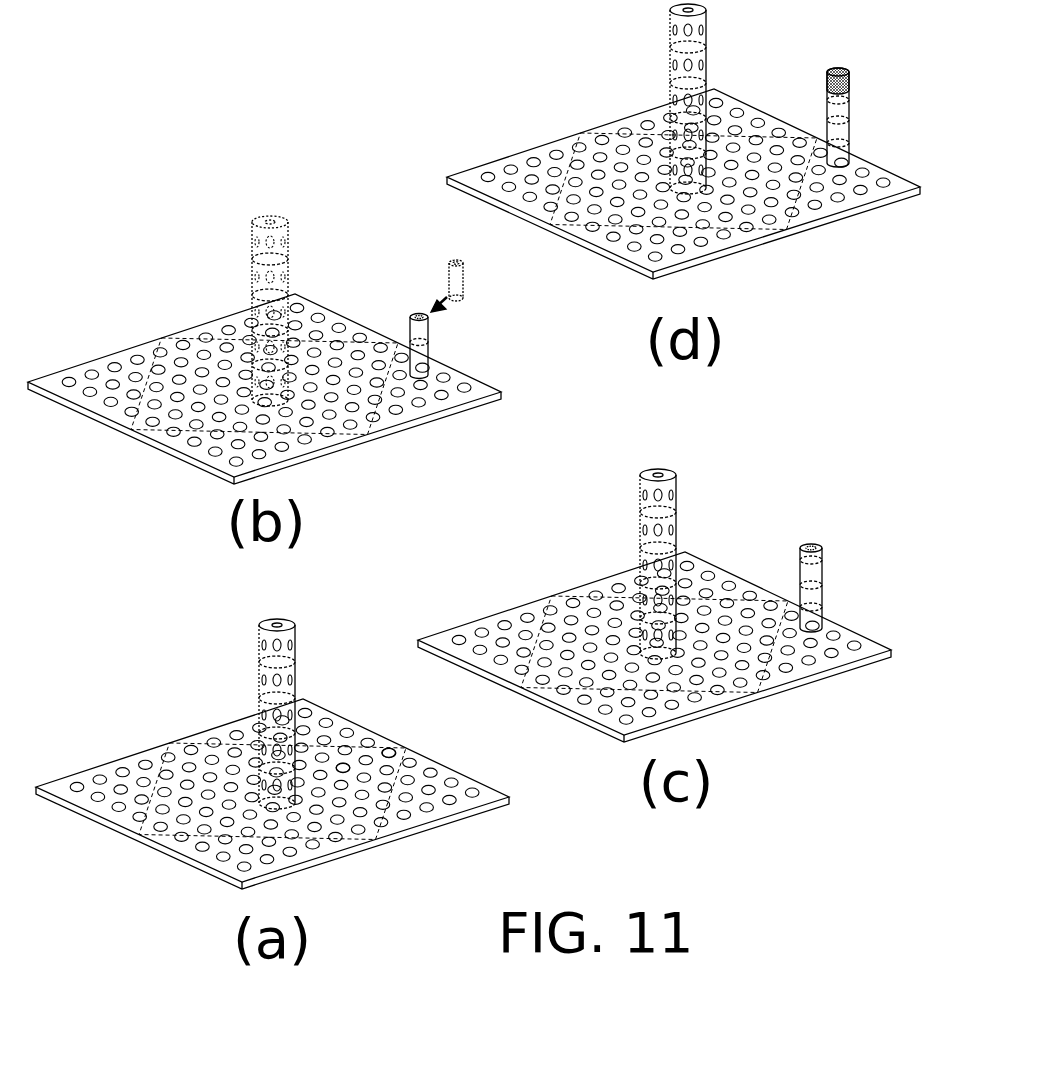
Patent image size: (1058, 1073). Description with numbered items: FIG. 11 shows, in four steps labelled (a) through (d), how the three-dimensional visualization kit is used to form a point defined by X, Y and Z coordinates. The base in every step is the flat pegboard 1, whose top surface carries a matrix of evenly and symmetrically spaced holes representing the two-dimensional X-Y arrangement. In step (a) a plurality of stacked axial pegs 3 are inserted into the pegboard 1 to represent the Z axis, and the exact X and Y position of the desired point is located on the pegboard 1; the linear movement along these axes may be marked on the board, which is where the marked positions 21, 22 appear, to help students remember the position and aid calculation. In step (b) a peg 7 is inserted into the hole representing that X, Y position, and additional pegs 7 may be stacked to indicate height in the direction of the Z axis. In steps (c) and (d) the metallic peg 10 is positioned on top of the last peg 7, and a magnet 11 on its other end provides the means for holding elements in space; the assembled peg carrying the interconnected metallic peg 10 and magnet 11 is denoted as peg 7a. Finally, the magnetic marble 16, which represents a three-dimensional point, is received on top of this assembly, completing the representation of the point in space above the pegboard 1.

The pegboard 1 is at (168, 742).
The axial peg 3 is at (276, 698).
The peg 7 is at (461, 267).
The peg with interconnected metallic peg and magnet 7a is at (841, 117).
The metallic peg 10 is at (803, 562).
The magnet 11 is at (812, 547).
The magnetic marble 16 is at (838, 70).
The first hole 21 is at (336, 772).
The second hole / pin position 22 is at (383, 759).